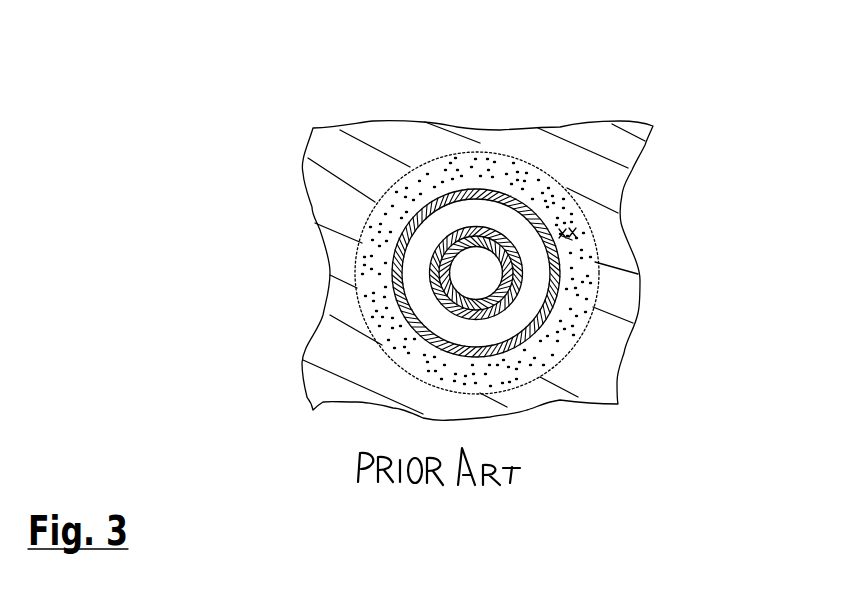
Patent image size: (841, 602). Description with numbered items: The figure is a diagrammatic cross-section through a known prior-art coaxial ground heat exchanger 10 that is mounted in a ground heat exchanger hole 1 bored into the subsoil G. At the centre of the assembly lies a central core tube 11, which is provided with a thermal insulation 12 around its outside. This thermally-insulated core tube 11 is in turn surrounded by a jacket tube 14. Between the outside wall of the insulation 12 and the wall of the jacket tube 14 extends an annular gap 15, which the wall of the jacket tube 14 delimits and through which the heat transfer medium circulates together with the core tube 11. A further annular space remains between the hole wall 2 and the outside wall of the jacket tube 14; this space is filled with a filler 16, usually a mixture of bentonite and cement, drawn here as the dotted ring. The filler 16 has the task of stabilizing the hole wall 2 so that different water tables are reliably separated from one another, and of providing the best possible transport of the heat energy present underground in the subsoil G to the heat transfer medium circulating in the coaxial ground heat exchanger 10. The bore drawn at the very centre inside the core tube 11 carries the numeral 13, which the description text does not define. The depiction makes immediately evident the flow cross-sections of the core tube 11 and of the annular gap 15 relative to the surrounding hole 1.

The ground heat exchanger hole 1 is at (502, 35).
The hole wall 2 is at (543, 173).
The filler 16 is at (430, 180).
The subsoil G is at (311, 158).
The coaxial ground heat exchanger 10 is at (580, 237).
The central core tube 11 is at (432, 249).
The thermal insulation 12 is at (432, 273).
The central bore 13 is at (472, 276).
The jacket tube 14 is at (557, 280).
The annular gap 15 is at (525, 303).